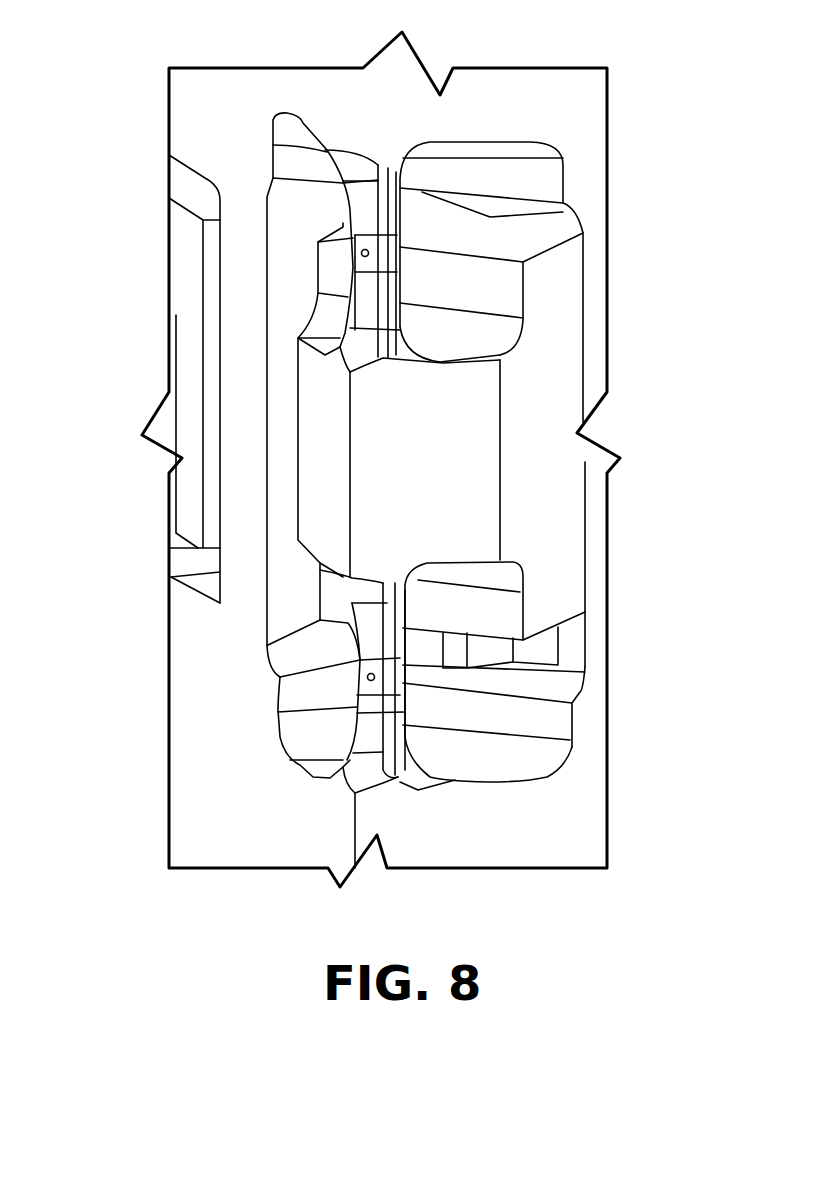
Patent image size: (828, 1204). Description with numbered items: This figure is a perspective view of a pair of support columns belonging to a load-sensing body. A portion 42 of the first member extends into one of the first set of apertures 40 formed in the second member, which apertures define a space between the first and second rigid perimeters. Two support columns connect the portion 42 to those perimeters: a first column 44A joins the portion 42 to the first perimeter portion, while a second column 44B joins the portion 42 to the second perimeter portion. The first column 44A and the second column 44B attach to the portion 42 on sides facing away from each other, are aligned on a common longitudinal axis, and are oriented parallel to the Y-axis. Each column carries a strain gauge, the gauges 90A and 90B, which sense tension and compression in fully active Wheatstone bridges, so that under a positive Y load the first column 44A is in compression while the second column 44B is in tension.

The first set of apertures 40 is at (523, 140).
The portion of the first member 42 is at (340, 482).
The first column 44A is at (360, 213).
The second column 44B is at (360, 730).
The strain gauge 90A is at (365, 257).
The strain gauge 90B is at (371, 681).